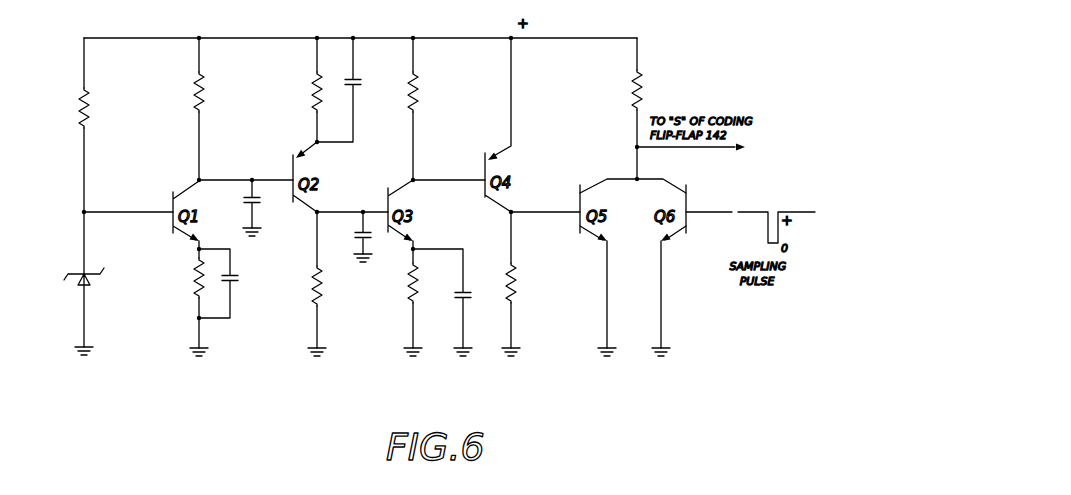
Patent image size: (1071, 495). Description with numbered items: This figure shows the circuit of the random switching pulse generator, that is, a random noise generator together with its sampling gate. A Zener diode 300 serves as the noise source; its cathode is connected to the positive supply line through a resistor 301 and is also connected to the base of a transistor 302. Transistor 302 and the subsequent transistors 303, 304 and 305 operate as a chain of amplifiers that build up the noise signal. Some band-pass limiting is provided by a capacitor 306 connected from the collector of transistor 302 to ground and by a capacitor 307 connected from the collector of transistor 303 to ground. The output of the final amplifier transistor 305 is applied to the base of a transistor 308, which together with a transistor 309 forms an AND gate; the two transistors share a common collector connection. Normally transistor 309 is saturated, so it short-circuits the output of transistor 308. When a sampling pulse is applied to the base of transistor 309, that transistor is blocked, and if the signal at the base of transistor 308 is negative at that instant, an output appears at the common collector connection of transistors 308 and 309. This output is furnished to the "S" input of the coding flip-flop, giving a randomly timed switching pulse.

The Zener diode 300 is at (95, 278).
The resistor 301 is at (86, 103).
The transistor 302 is at (198, 177).
The transistor 303 is at (313, 140).
The transistor 304 is at (416, 96).
The transistor 305 is at (492, 154).
The capacitor 306 is at (261, 204).
The capacitor 307 is at (372, 236).
The transistor 308 is at (593, 238).
The transistor 309 is at (688, 222).